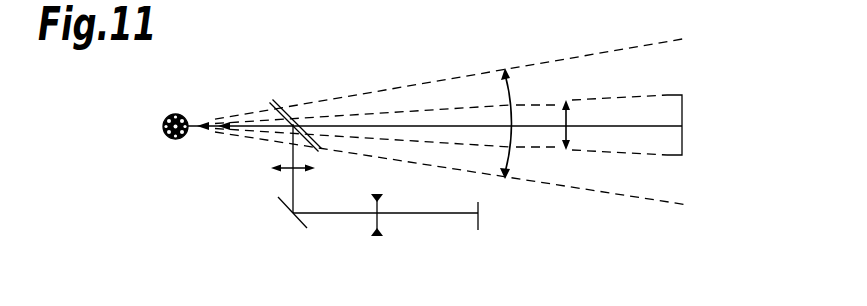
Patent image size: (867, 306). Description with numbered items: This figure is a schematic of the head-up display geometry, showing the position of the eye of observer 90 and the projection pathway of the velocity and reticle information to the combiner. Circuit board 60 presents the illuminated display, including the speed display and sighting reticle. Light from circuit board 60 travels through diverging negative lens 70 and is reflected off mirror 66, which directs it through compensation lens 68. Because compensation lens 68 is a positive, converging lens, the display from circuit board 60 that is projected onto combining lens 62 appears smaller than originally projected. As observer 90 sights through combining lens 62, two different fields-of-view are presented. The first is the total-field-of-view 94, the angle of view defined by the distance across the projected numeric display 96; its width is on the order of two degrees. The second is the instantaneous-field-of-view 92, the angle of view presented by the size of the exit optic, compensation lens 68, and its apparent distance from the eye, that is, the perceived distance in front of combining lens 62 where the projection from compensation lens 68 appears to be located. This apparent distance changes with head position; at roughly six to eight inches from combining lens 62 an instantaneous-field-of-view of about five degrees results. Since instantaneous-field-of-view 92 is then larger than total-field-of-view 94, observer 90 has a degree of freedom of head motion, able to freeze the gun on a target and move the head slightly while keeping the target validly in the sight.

The circuit board 60 is at (480, 220).
The combining lens 62 is at (276, 100).
The mirror 66 is at (290, 214).
The compensation lens 68 is at (291, 166).
The negative lens 70 is at (378, 220).
The observer 90 is at (167, 117).
The instantaneous-field-of-view 92 is at (503, 70).
The total-field-of-view 94 is at (567, 128).
The projected numeric display 96 is at (683, 138).